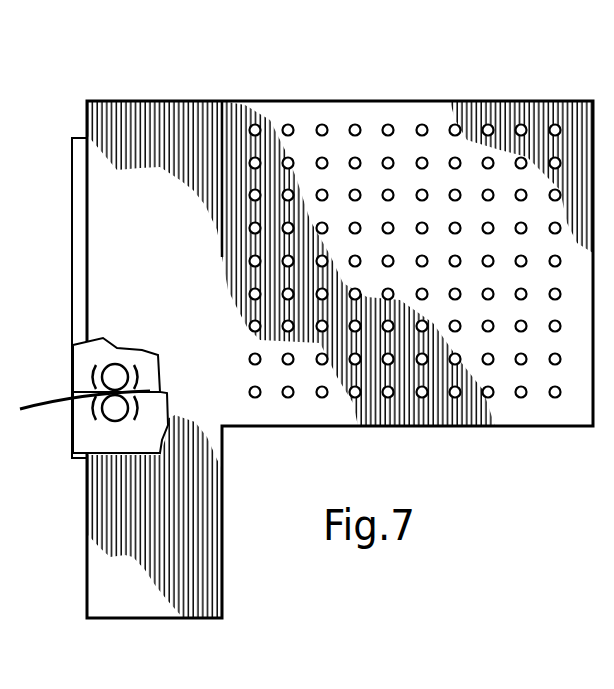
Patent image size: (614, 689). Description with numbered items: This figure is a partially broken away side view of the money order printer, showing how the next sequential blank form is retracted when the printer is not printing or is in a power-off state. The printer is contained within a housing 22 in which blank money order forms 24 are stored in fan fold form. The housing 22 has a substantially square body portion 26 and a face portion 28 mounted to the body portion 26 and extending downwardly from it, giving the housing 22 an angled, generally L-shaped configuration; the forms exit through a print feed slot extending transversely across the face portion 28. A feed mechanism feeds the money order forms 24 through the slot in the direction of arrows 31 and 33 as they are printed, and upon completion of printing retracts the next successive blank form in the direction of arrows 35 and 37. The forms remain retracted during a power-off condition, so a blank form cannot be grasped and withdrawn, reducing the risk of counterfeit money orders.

The housing 22 is at (162, 101).
The money order forms 24 is at (158, 357).
The body portion 26 is at (509, 410).
The face portion 28 is at (104, 593).
The arrow 31 is at (143, 348).
The arrow 33 is at (170, 423).
The arrow 35 is at (88, 378).
The arrow 37 is at (90, 408).